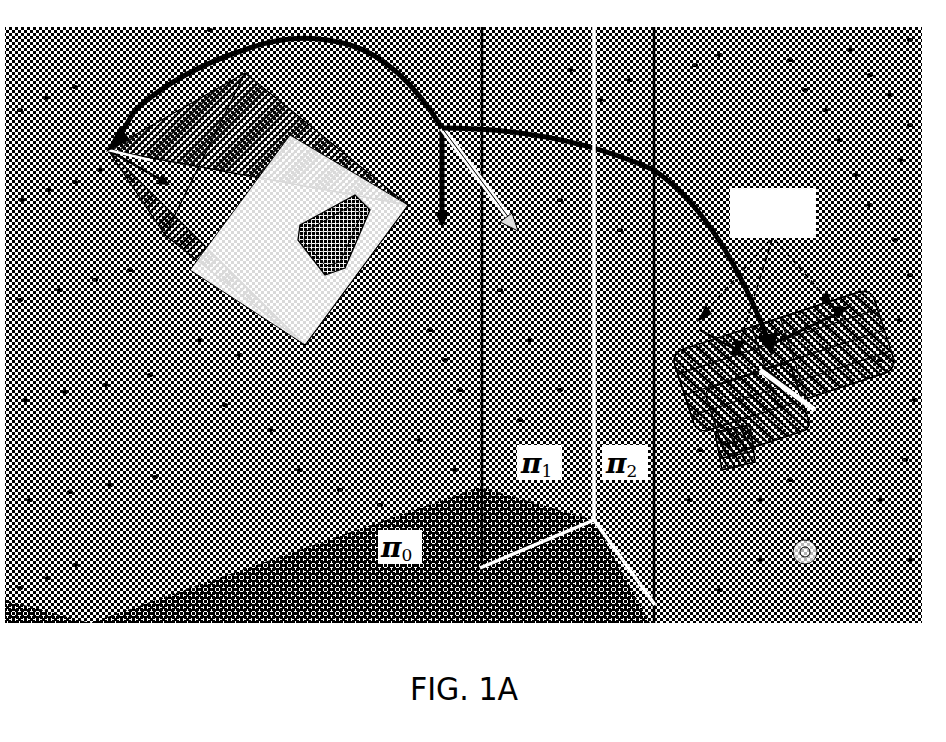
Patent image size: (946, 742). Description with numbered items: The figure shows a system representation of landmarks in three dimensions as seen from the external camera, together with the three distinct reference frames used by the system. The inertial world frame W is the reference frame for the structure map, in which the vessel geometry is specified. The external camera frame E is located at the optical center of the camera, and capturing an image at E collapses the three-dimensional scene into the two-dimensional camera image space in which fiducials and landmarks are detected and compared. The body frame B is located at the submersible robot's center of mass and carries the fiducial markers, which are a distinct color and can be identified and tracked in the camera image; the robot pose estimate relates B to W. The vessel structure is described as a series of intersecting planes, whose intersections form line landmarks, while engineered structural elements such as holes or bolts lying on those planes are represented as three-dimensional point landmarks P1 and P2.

The inertial world frame W is at (475, 139).
The external camera frame E is at (243, 191).
The body frame B is at (674, 299).
The three-dimensional point landmark P1 is at (567, 322).
The three-dimensional point landmark P2 is at (834, 554).